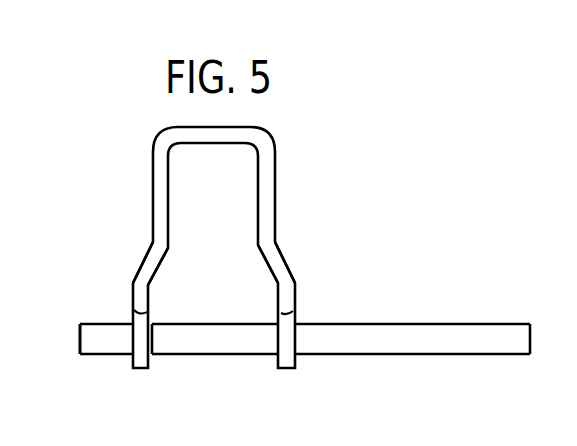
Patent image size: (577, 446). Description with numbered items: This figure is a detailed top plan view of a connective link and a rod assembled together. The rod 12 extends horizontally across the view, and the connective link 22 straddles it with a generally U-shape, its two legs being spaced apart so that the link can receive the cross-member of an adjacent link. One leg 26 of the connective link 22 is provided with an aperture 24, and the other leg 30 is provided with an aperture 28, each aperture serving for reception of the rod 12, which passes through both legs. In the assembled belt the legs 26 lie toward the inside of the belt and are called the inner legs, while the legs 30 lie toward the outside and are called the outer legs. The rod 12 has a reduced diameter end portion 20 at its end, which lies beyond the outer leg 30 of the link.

The rod 12 is at (220, 341).
The reduced diameter end portion 20 is at (100, 343).
The connective link 22 is at (269, 141).
The aperture 24 is at (291, 310).
The leg 26 is at (272, 258).
The aperture 28 is at (131, 307).
The leg 30 is at (152, 199).